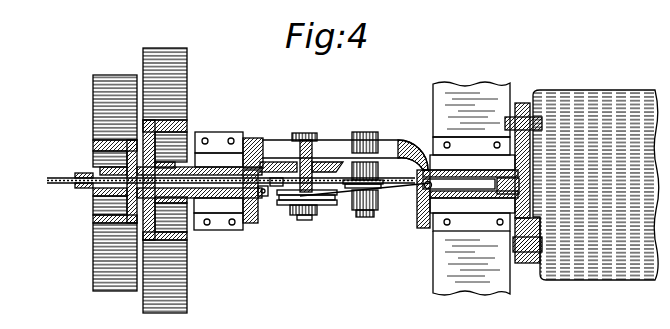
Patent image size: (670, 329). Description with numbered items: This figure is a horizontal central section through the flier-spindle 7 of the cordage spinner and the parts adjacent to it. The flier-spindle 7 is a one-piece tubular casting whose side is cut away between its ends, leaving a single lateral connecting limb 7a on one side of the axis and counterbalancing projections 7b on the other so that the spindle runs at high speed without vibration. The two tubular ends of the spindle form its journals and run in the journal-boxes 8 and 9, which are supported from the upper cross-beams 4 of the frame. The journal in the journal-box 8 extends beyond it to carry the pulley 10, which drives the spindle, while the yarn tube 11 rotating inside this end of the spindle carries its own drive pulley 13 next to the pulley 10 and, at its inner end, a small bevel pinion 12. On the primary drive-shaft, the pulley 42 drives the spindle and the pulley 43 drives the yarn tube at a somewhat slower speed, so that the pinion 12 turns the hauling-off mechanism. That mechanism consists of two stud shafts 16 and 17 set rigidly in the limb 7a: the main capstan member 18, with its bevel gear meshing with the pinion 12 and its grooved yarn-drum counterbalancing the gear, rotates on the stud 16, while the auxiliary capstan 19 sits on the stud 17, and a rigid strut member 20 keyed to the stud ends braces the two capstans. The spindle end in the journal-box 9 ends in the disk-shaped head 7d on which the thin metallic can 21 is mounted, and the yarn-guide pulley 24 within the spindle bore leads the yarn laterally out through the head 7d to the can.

The upper cross-beams 4 is at (485, 83).
The flier-spindle 7 is at (122, 198).
The connecting limb 7a is at (385, 148).
The projections 7b is at (252, 225).
The head 7d is at (525, 265).
The journal-box 8 is at (205, 157).
The journal-box 9 is at (478, 207).
The pulley 10 is at (160, 118).
The yarn tube 11 is at (84, 186).
The bevel pinion 12 is at (265, 196).
The drive pulley 13 is at (124, 220).
The stud shaft 16 is at (298, 133).
The stud shaft 17 is at (363, 132).
The main capstan member 18 is at (322, 168).
The auxiliary capstan 19 is at (380, 213).
The strut member 20 is at (338, 213).
The can 21 is at (596, 185).
The yarn-guide pulley 24 is at (509, 193).
The pulley 42 is at (186, 57).
The pulley 43 is at (92, 88).